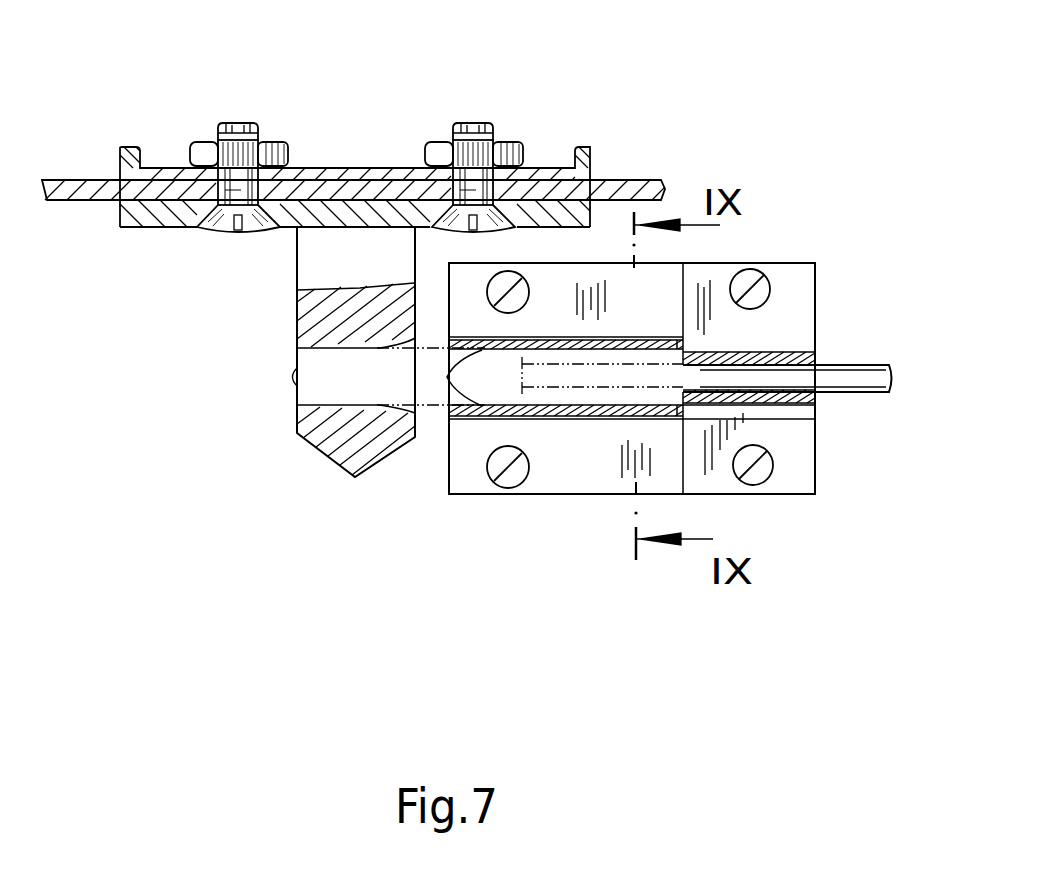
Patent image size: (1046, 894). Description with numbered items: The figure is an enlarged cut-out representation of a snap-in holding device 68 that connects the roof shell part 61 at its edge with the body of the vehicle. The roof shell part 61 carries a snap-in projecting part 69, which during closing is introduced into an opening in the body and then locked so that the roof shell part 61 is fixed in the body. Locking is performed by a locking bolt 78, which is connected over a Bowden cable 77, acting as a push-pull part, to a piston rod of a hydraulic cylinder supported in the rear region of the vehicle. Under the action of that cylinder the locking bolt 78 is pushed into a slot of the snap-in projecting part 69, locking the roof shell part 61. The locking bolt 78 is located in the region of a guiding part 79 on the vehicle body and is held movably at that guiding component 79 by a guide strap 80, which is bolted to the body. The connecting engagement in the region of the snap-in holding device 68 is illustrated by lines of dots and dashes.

The roof shell part 61 is at (97, 163).
The snap-in holding device 68 is at (505, 603).
The snap-in projecting part 69 is at (312, 448).
The Bowden cable 77 is at (862, 384).
The locking bolt 78 is at (468, 382).
The guiding part 79 is at (597, 457).
The guide strap 80 is at (567, 467).